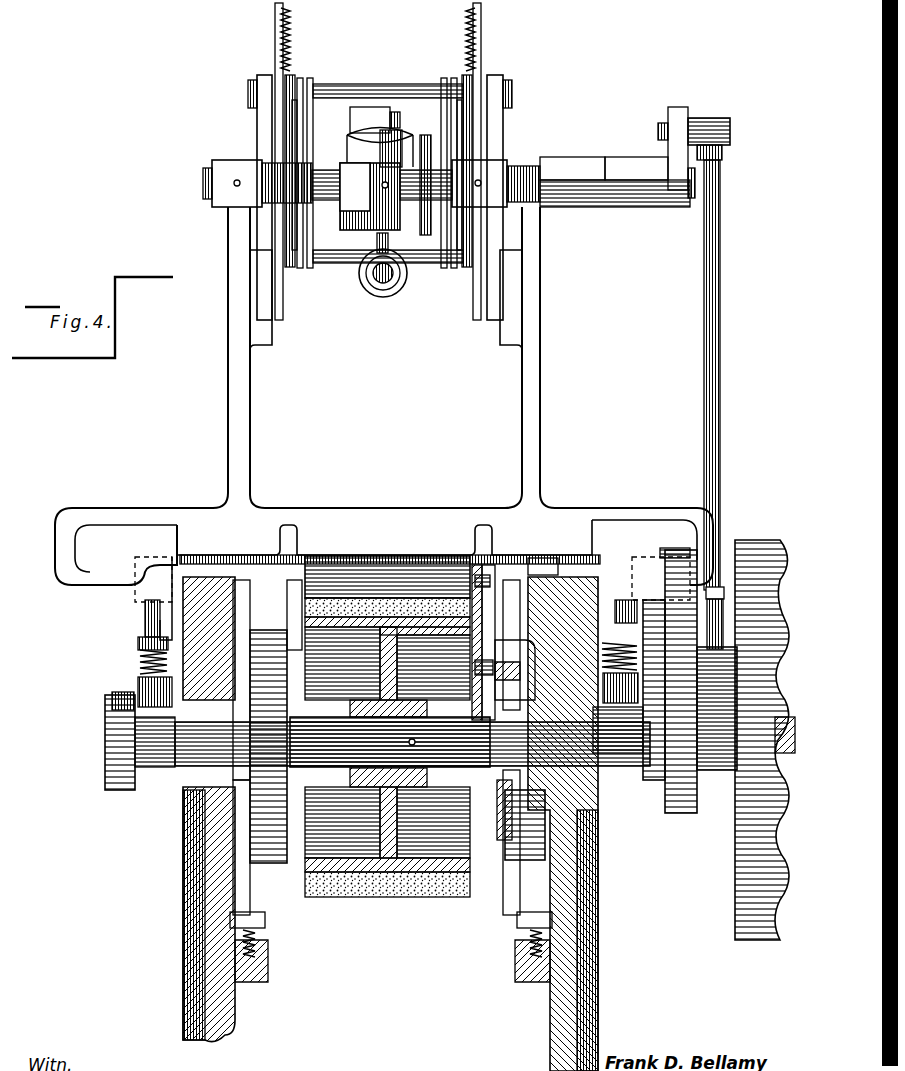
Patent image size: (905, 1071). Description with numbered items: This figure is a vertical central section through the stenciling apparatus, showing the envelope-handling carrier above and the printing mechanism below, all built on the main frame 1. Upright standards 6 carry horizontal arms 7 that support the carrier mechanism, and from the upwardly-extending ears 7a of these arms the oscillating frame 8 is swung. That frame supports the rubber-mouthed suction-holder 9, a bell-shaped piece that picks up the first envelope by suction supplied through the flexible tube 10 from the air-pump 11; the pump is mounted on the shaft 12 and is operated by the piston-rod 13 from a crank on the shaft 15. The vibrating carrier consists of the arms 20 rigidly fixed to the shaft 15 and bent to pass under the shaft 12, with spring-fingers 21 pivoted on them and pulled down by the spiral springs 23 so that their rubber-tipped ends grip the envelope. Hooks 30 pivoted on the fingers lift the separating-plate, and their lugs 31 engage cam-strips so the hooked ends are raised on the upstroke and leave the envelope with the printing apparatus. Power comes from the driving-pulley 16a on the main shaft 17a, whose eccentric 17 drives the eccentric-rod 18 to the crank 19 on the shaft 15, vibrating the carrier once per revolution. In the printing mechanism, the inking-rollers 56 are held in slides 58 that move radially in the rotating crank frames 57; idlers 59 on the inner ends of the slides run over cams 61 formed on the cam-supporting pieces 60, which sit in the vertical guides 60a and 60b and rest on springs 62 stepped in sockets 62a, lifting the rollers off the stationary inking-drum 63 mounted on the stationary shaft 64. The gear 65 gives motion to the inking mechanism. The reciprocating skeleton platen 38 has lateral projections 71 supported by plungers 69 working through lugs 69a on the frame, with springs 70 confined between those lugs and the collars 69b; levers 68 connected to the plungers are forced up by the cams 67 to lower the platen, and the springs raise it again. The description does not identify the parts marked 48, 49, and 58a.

The main frame 1 is at (192, 888).
The upright standards 6 is at (232, 412).
The horizontal arms 7 is at (276, 342).
The upwardly-extending ears 7a is at (262, 131).
The oscillating frame 8 is at (366, 86).
The suction-holder 9 is at (383, 288).
The flexible tube 10 is at (390, 238).
The air-pump 11 is at (365, 228).
The shaft 12 is at (432, 212).
The piston-rod 13 is at (388, 145).
The shaft 15 is at (205, 191).
The driving-pulley 16a is at (763, 754).
The eccentric 17 is at (720, 772).
The main shaft 17a is at (791, 758).
The eccentric-rod 18 is at (722, 440).
The crank 19 is at (352, 110).
The arms of the vibrating carrier 20 is at (300, 78).
The spring-fingers 21 is at (276, 55).
The spiral springs 23 is at (292, 56).
The hooks 30 is at (300, 128).
The lugs 31 is at (313, 92).
The reciprocating skeleton platen 38 is at (228, 565).
The stop 48 is at (676, 548).
The gear 49 is at (683, 701).
The inking-rollers 56 is at (368, 560).
The rotating crank frames 57 is at (288, 600).
The slides 58 is at (490, 583).
The block 58a is at (474, 670).
The idlers 59 is at (505, 674).
The cam-supporting pieces 60 is at (517, 877).
The vertical guide 60a is at (266, 918).
The vertical guide 60b is at (554, 563).
The cams 61 is at (540, 660).
The springs 62 is at (262, 940).
The sockets 62a is at (270, 975).
The stationary inking-drum 63 is at (395, 897).
The stationary shaft 64 is at (632, 770).
The gear 65 is at (280, 865).
The cams 67 is at (115, 790).
The levers 68 is at (165, 768).
The plungers 69 is at (136, 680).
The lugs 69a is at (118, 700).
The collars 69b is at (135, 638).
The springs 70 is at (138, 655).
The lateral projections 71 is at (137, 556).